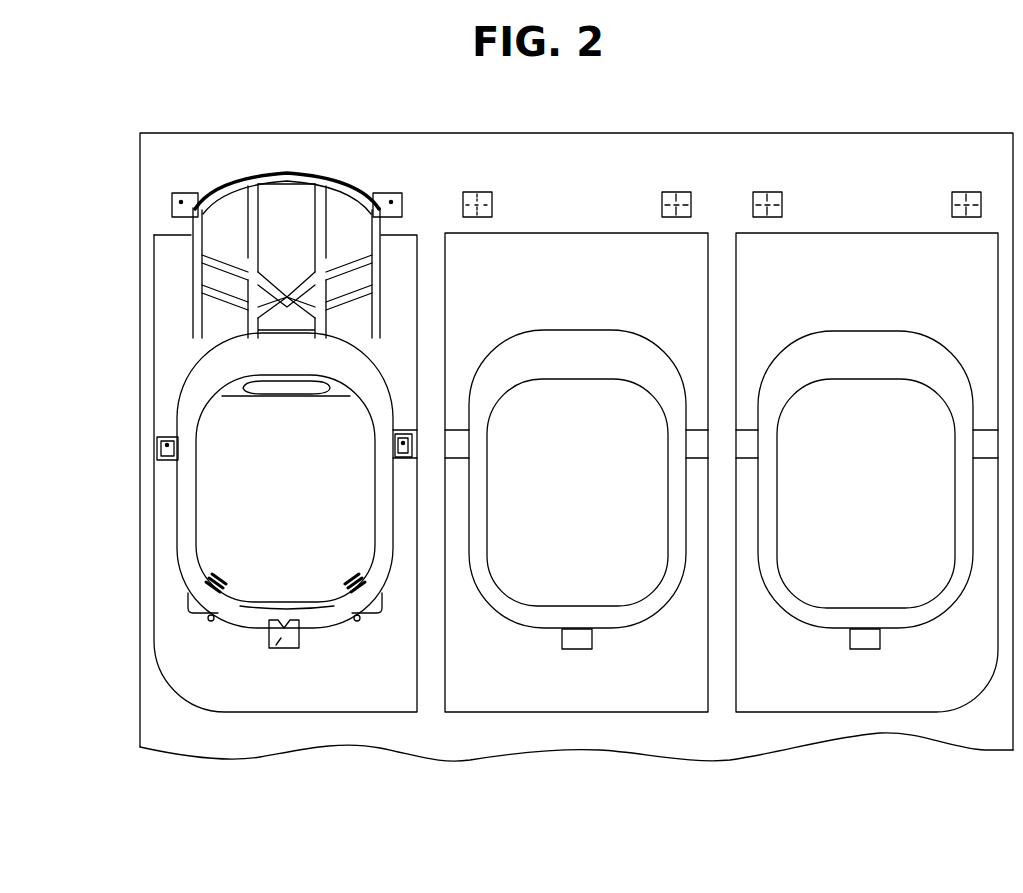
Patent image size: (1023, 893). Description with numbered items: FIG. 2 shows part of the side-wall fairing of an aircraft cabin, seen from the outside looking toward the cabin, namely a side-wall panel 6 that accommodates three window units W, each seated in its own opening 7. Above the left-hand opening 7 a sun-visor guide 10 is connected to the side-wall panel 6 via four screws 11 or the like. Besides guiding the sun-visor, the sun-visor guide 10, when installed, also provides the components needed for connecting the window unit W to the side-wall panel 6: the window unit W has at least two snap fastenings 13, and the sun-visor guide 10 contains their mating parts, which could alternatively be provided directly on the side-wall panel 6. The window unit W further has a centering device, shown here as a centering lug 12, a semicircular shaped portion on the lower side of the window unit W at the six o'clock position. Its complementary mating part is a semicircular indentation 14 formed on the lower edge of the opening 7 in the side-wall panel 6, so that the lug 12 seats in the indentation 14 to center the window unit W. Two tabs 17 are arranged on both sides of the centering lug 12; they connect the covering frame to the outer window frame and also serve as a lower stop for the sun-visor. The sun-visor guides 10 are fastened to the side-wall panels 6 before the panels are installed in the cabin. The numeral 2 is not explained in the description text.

The window unit 2 is at (218, 520).
The side-wall panel 6 is at (620, 687).
The opening 7 is at (296, 518).
The sun-visor guide 10 is at (226, 262).
The screws 11 is at (181, 200).
The centering lug 12 is at (277, 640).
The snap fastenings 13 is at (370, 427).
The semicircular indentation 14 is at (287, 630).
The tabs 17 is at (215, 628).
The window unit W is at (187, 590).